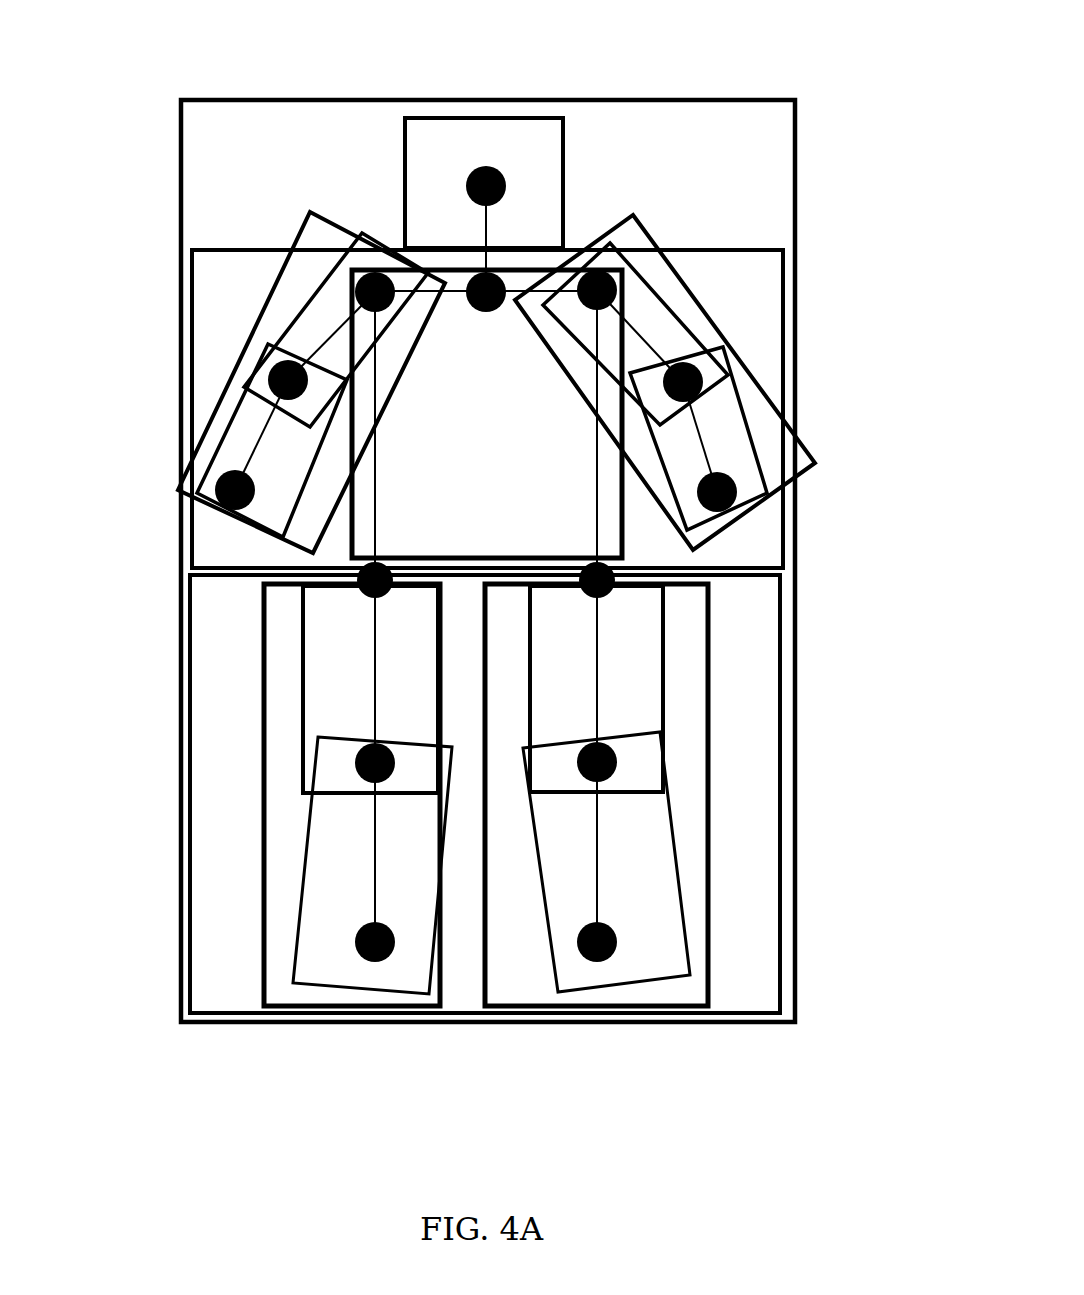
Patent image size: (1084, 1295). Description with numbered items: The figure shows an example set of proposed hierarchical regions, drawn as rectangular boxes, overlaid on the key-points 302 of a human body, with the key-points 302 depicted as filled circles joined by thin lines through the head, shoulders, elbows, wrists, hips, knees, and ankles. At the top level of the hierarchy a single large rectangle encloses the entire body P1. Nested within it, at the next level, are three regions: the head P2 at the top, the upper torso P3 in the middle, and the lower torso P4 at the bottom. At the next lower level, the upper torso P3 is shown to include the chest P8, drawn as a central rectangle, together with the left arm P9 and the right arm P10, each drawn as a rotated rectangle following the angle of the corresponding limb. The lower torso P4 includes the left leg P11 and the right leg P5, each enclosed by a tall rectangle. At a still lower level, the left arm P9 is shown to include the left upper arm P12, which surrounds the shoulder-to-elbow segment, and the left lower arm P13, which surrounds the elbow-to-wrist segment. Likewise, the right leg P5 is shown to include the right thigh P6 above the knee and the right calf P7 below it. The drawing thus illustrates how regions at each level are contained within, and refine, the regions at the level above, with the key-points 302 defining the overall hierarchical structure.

The key-points 302 is at (607, 957).
The entire body P1 is at (488, 533).
The head P2 is at (484, 183).
The upper torso P3 is at (487, 389).
The lower torso P4 is at (485, 794).
The right leg P5 is at (596, 795).
The right thigh P6 is at (596, 689).
The right calf P7 is at (606, 862).
The chest P8 is at (487, 414).
The left arm P9 is at (311, 382).
The right arm P10 is at (665, 382).
The left leg P11 is at (387, 866).
The left upper arm P12 is at (336, 330).
The left lower arm P13 is at (272, 440).